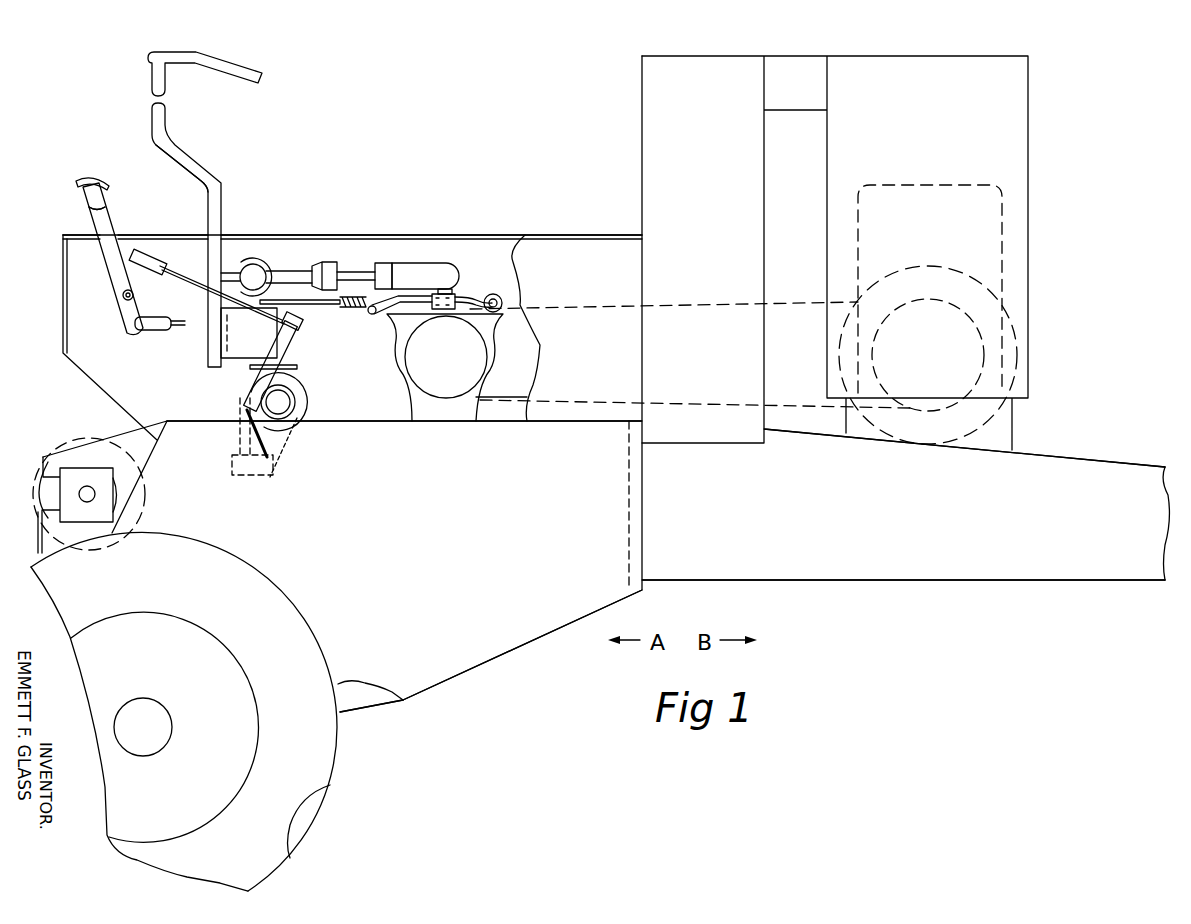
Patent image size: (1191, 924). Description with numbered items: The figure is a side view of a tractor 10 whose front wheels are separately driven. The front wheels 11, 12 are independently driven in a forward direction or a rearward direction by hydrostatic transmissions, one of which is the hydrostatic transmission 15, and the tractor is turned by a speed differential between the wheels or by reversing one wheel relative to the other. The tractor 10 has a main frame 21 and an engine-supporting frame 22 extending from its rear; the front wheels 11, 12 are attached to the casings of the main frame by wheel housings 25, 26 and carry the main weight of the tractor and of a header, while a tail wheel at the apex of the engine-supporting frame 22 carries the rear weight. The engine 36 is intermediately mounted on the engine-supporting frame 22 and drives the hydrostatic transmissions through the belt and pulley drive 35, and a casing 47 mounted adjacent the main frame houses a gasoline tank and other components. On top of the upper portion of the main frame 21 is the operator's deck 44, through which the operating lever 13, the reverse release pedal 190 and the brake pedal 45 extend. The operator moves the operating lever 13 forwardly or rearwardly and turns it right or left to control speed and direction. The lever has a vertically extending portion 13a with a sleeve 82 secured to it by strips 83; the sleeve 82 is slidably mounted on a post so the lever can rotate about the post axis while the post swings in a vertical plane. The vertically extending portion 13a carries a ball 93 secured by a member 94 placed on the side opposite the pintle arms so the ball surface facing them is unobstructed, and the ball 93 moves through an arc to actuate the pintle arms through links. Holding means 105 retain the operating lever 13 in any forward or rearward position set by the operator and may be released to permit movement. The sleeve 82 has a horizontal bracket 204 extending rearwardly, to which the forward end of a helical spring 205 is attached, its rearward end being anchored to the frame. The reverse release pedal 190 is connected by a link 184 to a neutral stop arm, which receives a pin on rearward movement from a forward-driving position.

The tractor 10 is at (428, 199).
The front wheel 11 is at (333, 767).
The front wheel 12 is at (303, 820).
The operating lever 13 is at (194, 118).
The vertically extending portion 13a is at (207, 185).
The hydrostatic transmission 15 is at (390, 392).
The main frame 21 is at (512, 660).
The engine-supporting frame 22 is at (1000, 560).
The wheel housing 25 is at (360, 698).
The wheel housing 26 is at (423, 678).
The belt and pulley drive 35 is at (513, 241).
The engine 36 is at (1005, 192).
The operator's deck 44 is at (330, 213).
The brake pedal 45 is at (92, 198).
The casing 47 is at (653, 98).
The sleeve 82 is at (282, 367).
The strips 83 is at (232, 335).
The ball 93 is at (243, 264).
The member 94 is at (223, 270).
The holding means 105 is at (232, 399).
The link 184 is at (160, 330).
The reverse release pedal 190 is at (97, 227).
The horizontal bracket 204 is at (318, 293).
The helical spring 205 is at (350, 303).